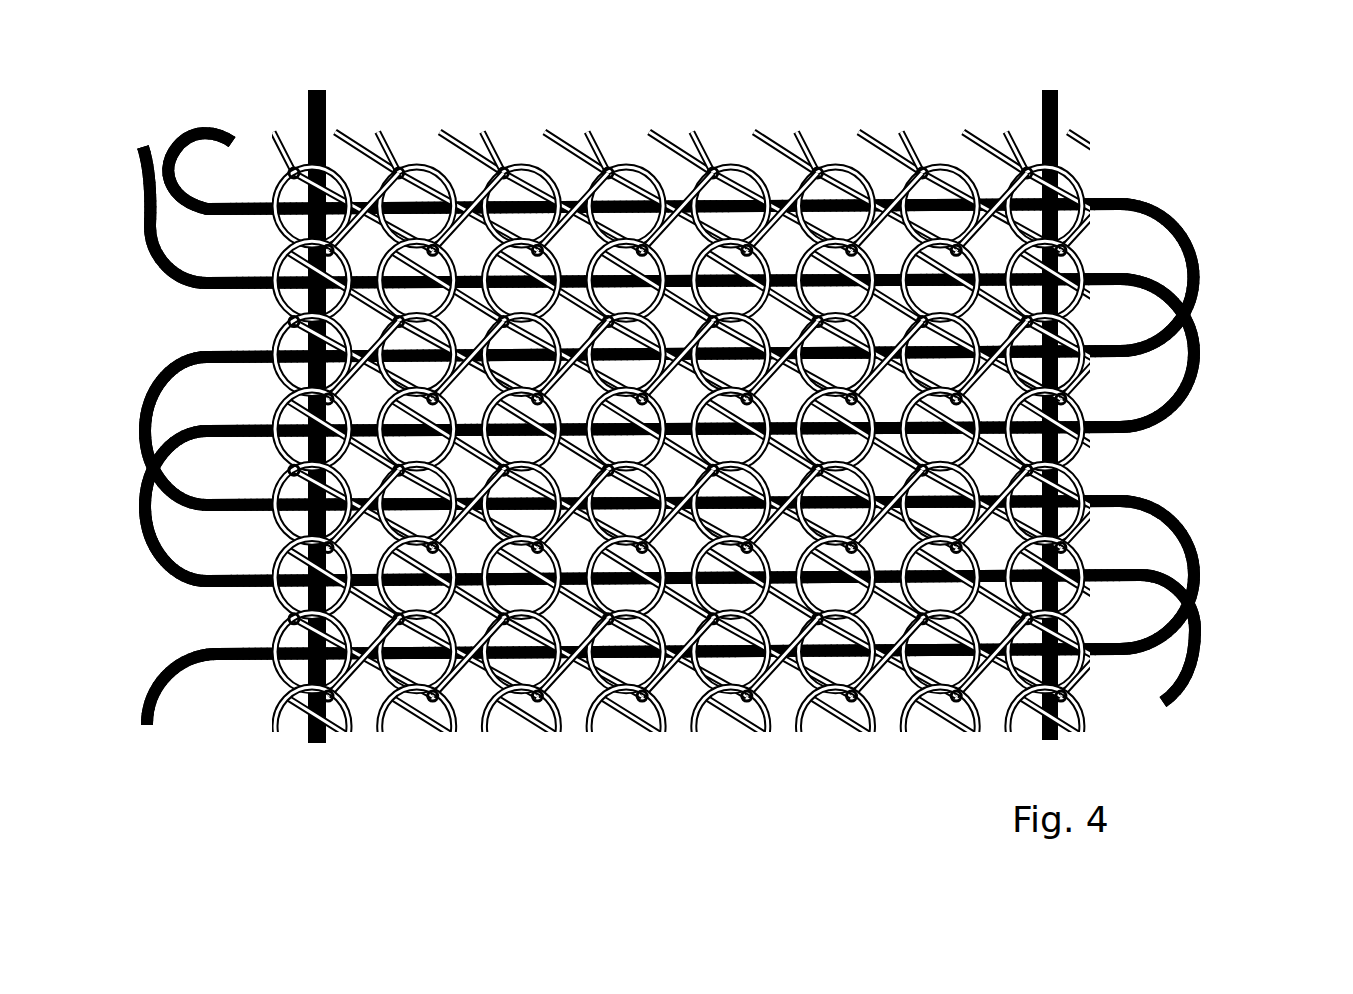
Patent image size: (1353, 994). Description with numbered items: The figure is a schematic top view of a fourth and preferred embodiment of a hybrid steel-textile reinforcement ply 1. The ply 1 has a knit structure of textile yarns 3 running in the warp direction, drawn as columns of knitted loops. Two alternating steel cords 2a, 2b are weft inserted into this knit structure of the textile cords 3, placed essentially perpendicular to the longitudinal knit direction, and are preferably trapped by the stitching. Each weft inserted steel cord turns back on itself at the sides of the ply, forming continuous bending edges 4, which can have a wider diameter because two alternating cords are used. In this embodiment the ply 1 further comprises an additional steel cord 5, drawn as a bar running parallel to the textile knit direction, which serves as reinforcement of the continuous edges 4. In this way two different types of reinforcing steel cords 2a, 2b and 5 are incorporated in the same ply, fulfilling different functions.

The hybrid steel-textile reinforcement ply 1 is at (1153, 73).
The steel cord 2a is at (1105, 198).
The steel cord 2b is at (1105, 432).
The textile yarns 3 is at (1085, 487).
The continuous edges 4 is at (1197, 570).
The additional steel cord 5 is at (1058, 118).